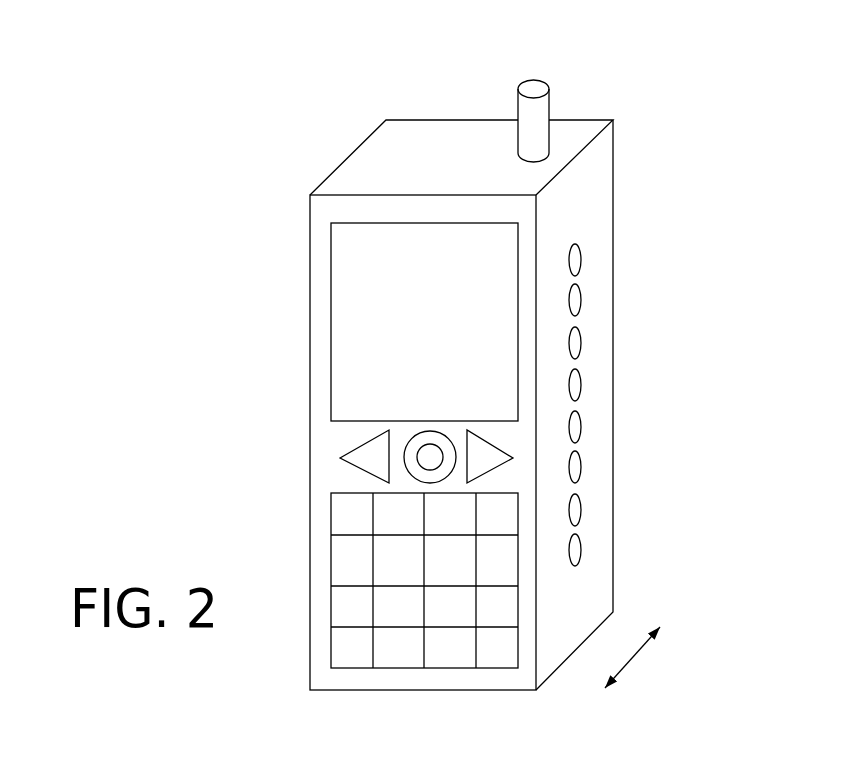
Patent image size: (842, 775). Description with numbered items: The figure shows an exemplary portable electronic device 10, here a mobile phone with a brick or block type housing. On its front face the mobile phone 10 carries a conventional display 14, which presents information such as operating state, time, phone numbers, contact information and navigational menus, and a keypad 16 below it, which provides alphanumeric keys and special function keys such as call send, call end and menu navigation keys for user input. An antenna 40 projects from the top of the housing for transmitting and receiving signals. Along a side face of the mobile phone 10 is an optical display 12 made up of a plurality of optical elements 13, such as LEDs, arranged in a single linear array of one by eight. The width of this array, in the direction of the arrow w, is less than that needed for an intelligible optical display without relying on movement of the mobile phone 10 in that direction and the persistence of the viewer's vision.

The portable electronic device 10 is at (227, 192).
The optical display 12 is at (667, 515).
The optical elements 13 is at (578, 378).
The display 14 is at (356, 317).
The keypad 16 is at (362, 555).
The antenna 40 is at (587, 111).